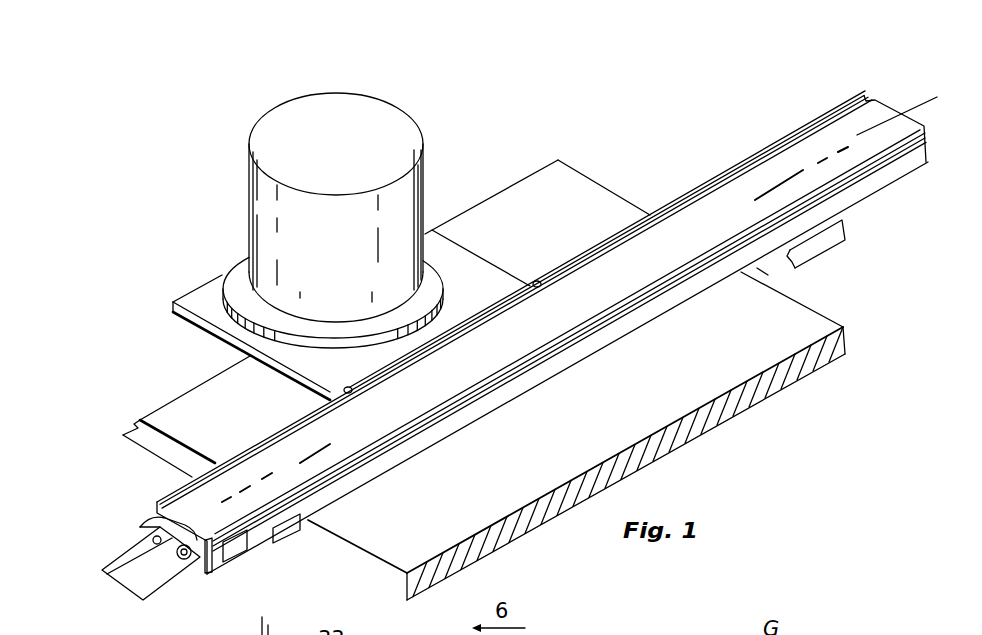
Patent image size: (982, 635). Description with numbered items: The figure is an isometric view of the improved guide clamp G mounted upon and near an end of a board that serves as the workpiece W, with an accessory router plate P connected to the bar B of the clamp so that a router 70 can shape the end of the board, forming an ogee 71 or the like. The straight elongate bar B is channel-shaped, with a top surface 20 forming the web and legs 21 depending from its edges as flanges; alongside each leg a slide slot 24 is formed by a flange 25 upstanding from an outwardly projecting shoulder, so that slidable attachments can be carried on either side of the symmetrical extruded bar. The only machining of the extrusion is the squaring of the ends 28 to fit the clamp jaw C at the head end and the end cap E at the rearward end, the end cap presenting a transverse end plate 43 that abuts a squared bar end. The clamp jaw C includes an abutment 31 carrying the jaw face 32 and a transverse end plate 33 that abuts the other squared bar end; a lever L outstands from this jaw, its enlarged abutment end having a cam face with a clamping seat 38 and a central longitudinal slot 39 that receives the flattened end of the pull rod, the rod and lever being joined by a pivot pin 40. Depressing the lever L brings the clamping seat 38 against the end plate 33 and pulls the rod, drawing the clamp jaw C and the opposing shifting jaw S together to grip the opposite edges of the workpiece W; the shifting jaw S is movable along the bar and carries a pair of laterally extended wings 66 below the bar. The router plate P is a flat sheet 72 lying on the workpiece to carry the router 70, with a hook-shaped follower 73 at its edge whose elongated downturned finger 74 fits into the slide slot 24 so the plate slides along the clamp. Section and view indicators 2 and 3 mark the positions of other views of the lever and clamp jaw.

The router 70 is at (262, 210).
The flat sheet 72 is at (256, 344).
The hook-shaped follower 73 is at (345, 386).
The downturned finger 74 is at (589, 250).
The ogee 71 is at (140, 418).
The top surface 20 is at (500, 364).
The legs 21 is at (567, 339).
The slide slot 24 is at (746, 166).
The flange 25 is at (711, 184).
The squared bar ends 28 is at (537, 311).
The transverse end plate 43 is at (883, 103).
The wings 66 is at (823, 243).
The abutment 31 is at (252, 549).
The jaw face 32 is at (305, 538).
The transverse end plate 33 is at (205, 572).
The clamping seat 38 is at (200, 523).
The central longitudinal slot 39 is at (147, 537).
The pivot pin 40 is at (185, 560).
The view arrow FIG. 2 is at (742, 441).
The section line 3- 3 is at (914, 95).
The router plate P is at (407, 280).
The bar B is at (589, 250).
The guide clamp G is at (647, 176).
The clamp jaw C is at (217, 550).
The lever L is at (134, 556).
The shifting jaw S is at (822, 260).
The end cap E is at (930, 138).
The workpiece W is at (428, 572).